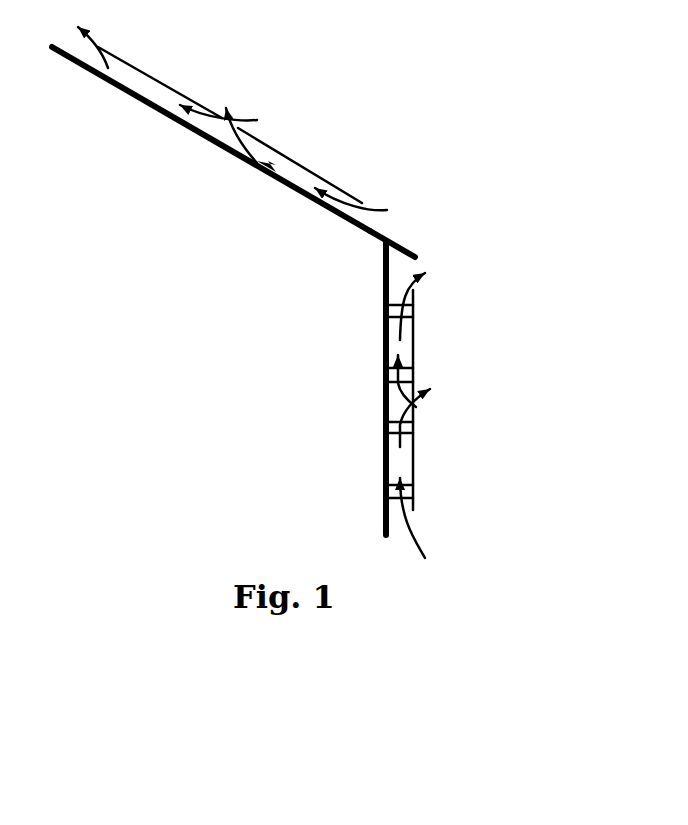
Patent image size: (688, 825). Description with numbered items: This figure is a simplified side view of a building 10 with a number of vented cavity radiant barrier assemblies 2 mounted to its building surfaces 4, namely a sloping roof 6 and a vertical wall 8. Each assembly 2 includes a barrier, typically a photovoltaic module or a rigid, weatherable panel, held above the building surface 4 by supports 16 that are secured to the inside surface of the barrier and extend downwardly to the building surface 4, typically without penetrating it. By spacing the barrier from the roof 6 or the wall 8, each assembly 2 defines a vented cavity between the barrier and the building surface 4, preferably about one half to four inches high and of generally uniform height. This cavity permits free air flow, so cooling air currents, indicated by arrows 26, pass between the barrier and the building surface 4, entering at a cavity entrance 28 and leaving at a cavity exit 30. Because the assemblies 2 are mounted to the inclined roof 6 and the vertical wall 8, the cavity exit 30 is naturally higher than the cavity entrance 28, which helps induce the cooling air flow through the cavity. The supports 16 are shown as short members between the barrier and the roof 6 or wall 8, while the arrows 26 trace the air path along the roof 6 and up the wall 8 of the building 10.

The vented cavity radiant barrier assembly 2 is at (190, 52).
The building surface 4 is at (377, 228).
The roof 6 is at (150, 107).
The wall 8 is at (351, 412).
The building 10 is at (420, 250).
The support 16 is at (112, 70).
The arrows 26 is at (373, 210).
The cavity entrance 28 is at (390, 507).
The cavity exit 30 is at (397, 417).